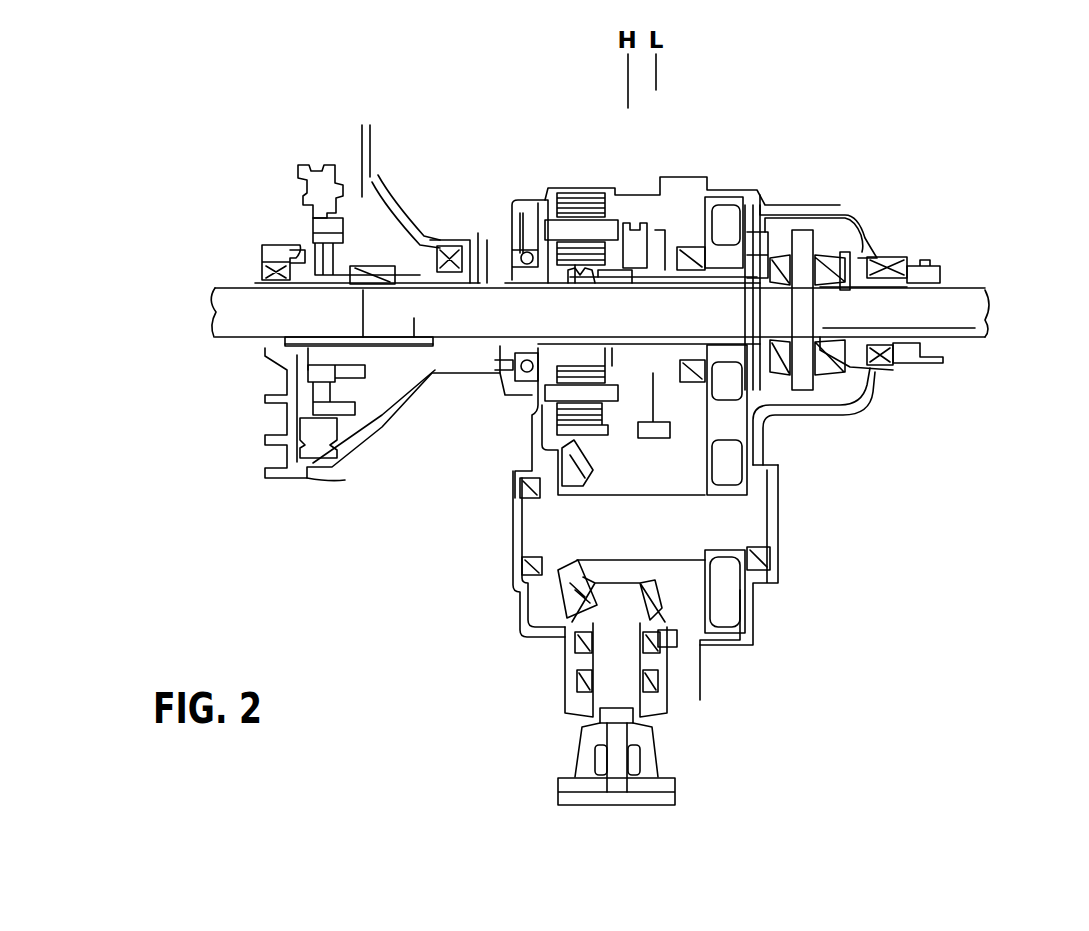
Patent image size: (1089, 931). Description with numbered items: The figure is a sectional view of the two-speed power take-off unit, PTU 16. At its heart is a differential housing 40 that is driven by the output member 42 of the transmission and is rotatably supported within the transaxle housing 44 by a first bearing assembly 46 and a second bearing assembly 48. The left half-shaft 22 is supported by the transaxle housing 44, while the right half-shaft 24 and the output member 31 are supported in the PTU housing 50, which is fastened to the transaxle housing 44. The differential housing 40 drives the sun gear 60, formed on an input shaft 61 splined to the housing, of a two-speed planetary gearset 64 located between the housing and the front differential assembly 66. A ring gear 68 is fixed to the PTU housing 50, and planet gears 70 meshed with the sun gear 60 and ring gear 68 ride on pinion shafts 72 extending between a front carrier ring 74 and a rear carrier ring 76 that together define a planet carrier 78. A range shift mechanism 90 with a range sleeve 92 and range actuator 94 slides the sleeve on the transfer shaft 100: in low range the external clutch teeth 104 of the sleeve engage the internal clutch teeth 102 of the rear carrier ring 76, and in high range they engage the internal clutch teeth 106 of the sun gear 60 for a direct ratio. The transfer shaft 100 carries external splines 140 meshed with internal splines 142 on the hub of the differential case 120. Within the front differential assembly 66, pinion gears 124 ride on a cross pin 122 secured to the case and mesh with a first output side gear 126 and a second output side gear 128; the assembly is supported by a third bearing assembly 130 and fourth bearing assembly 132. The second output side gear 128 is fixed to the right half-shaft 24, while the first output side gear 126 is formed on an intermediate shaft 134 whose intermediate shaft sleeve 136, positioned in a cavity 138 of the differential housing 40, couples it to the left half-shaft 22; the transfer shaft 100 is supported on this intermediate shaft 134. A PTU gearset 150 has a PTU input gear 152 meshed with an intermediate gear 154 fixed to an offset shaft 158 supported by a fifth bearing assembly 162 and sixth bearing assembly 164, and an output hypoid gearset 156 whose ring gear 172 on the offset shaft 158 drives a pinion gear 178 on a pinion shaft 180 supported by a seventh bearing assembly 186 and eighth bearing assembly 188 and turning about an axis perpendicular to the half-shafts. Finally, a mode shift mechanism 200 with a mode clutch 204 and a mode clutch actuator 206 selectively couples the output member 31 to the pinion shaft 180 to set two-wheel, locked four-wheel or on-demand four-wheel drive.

The PTU 16 is at (997, 125).
The left half-shaft 22 is at (230, 325).
The right half-shaft 24 is at (977, 325).
The output member 31 is at (572, 729).
The differential housing 40 is at (347, 222).
The output member 42 is at (322, 165).
The transaxle housing 44 is at (422, 242).
The first bearing assembly 46 is at (297, 260).
The second bearing assembly 48 is at (447, 242).
The PTU housing 50 is at (511, 197).
The sun gear 60 is at (560, 350).
The input shaft 61 is at (487, 280).
The two-speed planetary gearset 64 is at (564, 190).
The front differential assembly 66 is at (860, 235).
The ring gear 68 is at (580, 200).
The planet gears 70 is at (606, 205).
The pinion shaft 72 is at (662, 228).
The front carrier ring 74 is at (549, 217).
The rear carrier ring 76 is at (625, 222).
The planet carrier 78 is at (640, 230).
The range shift mechanism 90 is at (681, 413).
The range sleeve 92 is at (700, 225).
The range actuator 94 is at (653, 438).
The transfer shaft 100 is at (668, 282).
The internal clutch teeth 102 is at (600, 272).
The external clutch teeth 104 is at (600, 372).
The internal clutch teeth 106 is at (588, 270).
The differential case 120 is at (822, 250).
The cross pin 122 is at (805, 232).
The pinion gears 124 is at (887, 262).
The first output side gear 126 is at (825, 352).
The second output side gear 128 is at (910, 352).
The third bearing assembly 130 is at (755, 398).
The fourth bearing assembly 132 is at (907, 270).
The intermediate shaft 134 is at (414, 340).
The intermediate shaft sleeve 136 is at (347, 342).
The cavity 138 is at (390, 274).
The external splines 140 is at (760, 270).
The internal splines 142 is at (785, 240).
The PTU gearset 150 is at (790, 512).
The PTU input gear 152 is at (815, 405).
The intermediate gear 154 is at (740, 437).
The output hypoid gearset 156 is at (523, 600).
The offset shaft 158 is at (766, 538).
The fifth bearing assembly 162 is at (773, 570).
The sixth bearing assembly 164 is at (523, 560).
The ring gear 172 is at (567, 590).
The pinion gear 178 is at (750, 605).
The pinion shaft 180 is at (637, 608).
The seventh bearing assembly 186 is at (660, 645).
The eighth bearing assembly 188 is at (648, 680).
The mode shift mechanism 200 is at (603, 733).
The mode clutch 204 is at (627, 717).
The mode clutch actuator 206 is at (620, 740).